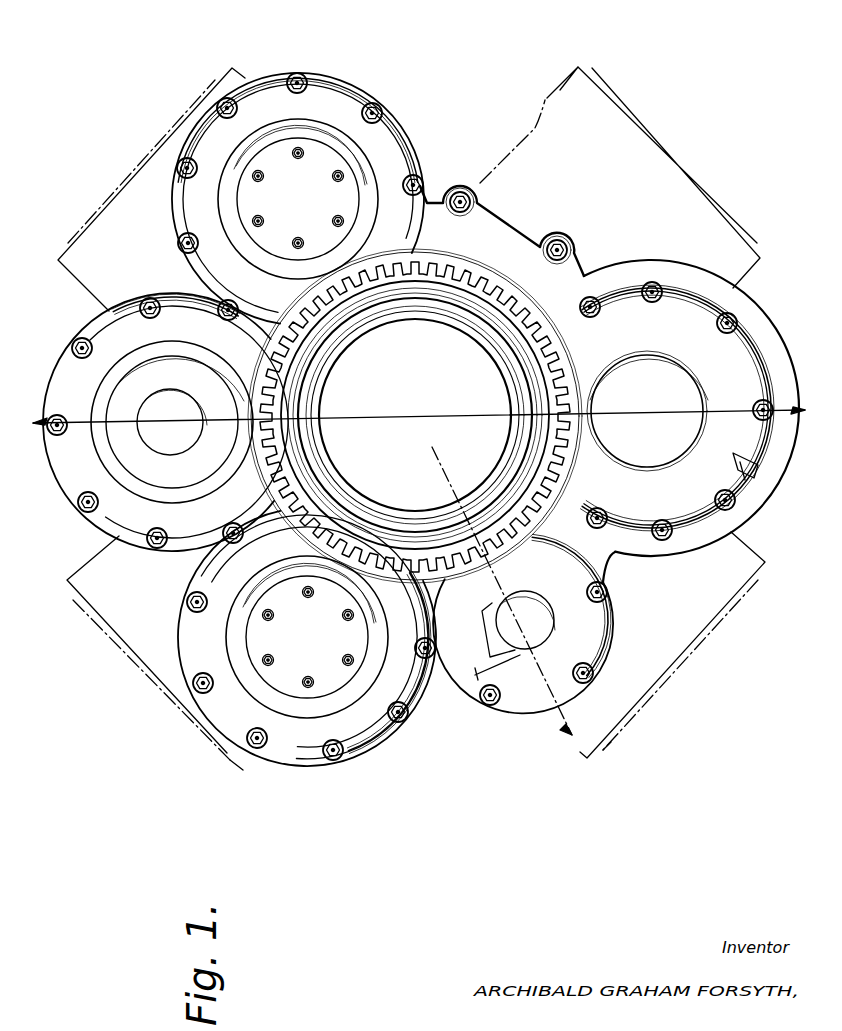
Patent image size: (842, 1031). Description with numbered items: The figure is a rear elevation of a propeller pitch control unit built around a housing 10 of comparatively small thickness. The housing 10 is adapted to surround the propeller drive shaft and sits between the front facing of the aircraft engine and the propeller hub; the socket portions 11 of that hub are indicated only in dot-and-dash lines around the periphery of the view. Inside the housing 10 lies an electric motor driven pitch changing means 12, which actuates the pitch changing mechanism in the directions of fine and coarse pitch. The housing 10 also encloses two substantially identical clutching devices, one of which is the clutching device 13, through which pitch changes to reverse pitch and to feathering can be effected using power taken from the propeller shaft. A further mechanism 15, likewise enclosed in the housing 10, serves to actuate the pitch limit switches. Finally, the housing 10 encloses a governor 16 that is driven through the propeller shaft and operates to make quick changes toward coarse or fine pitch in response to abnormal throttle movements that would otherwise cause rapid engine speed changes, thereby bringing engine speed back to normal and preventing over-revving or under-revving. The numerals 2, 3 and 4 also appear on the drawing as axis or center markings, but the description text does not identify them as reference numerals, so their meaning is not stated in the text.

The horizontal axis 2 is at (409, 397).
The central gear wheel 3 is at (420, 450).
The inclined axis 4 is at (512, 591).
The housing 10 is at (486, 237).
The socket portions 11 is at (565, 98).
The electric motor driven pitch changing means 12 is at (744, 360).
The clutching device 13 is at (272, 87).
The mechanism for actuating pitch limit switches 15 is at (70, 363).
The governor 16 is at (544, 677).